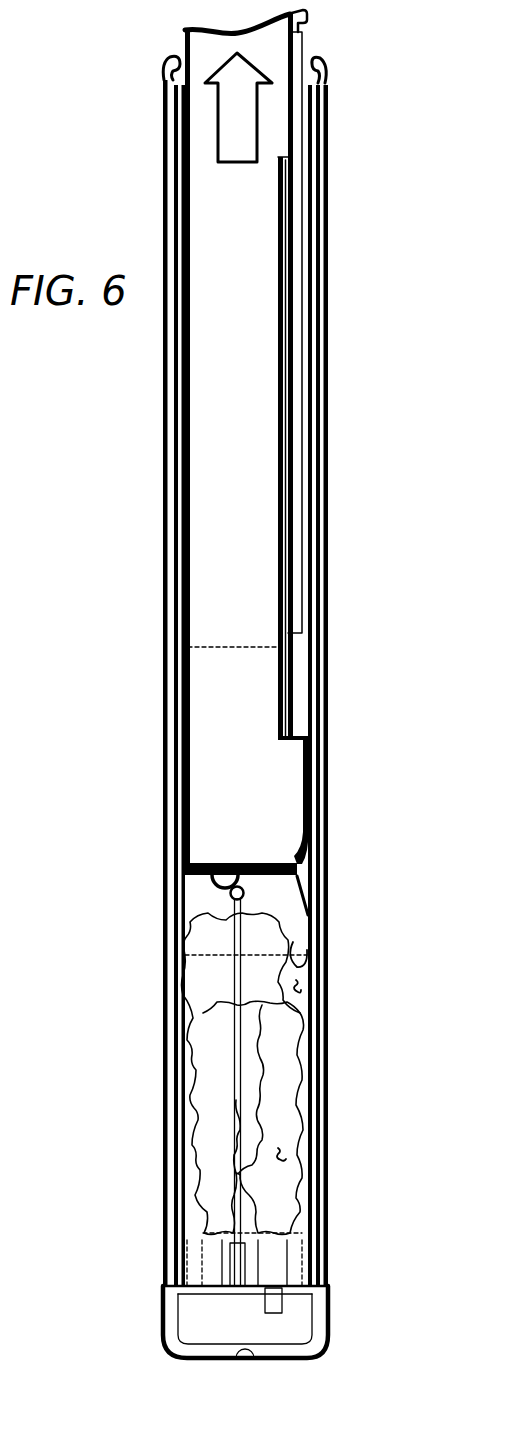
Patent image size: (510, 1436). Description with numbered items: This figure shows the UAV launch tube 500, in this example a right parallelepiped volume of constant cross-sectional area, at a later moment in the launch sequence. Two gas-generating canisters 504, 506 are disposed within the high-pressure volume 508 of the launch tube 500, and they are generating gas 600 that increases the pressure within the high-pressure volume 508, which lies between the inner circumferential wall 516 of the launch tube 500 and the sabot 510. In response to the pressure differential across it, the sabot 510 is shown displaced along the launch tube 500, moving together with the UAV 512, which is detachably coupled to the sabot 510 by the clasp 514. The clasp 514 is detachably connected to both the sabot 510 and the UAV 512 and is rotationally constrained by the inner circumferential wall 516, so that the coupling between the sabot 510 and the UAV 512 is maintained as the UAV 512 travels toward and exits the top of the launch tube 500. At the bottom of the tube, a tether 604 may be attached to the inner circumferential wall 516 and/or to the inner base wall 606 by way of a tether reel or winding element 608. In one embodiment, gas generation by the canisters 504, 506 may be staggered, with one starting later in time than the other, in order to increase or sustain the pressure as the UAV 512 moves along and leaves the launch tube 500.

The launch tube 500 is at (156, 437).
The gas-generating canister 504 is at (210, 1250).
The gas-generating canister 506 is at (278, 1253).
The high-pressure volume 508 is at (300, 990).
The sabot 510 is at (200, 892).
The UAV 512 is at (240, 597).
The clasp 514 is at (302, 862).
The inner circumferential wall 516 is at (293, 942).
The gas 600 is at (281, 1155).
The tether 604 is at (230, 972).
The inner base wall 606 is at (228, 1294).
The tether reel or winding element 608 is at (232, 1280).